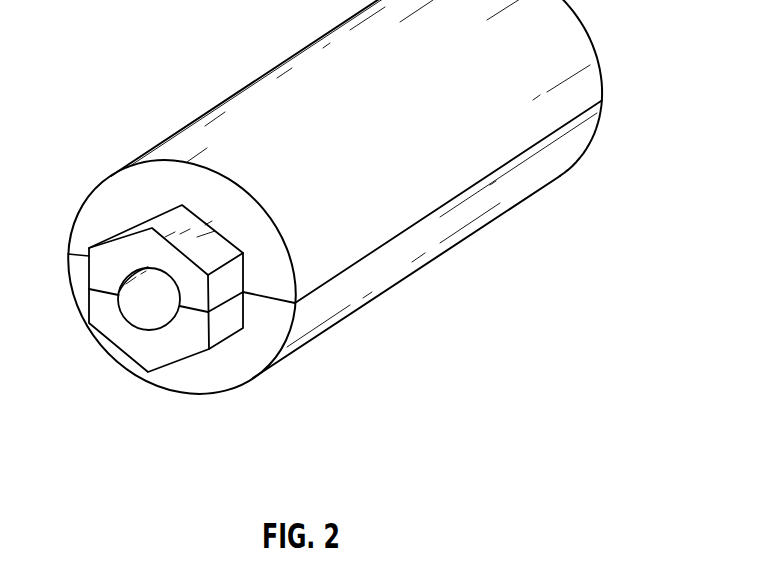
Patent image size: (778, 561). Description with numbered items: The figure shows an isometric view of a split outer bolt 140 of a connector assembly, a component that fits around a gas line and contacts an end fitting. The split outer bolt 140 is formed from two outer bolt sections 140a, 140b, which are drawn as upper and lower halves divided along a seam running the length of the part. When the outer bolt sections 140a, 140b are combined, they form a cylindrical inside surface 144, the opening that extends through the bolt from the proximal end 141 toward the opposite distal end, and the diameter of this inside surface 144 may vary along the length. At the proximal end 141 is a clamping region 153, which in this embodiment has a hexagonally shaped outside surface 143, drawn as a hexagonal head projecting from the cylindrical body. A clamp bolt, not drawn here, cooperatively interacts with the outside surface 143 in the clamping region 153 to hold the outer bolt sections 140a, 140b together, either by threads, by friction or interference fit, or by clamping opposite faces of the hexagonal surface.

The split outer bolt 140 is at (154, 103).
The outer bolt section 140a is at (533, 58).
The outer bolt section 140b is at (552, 155).
The proximal end 141 is at (107, 322).
The outside surface 143 is at (398, 287).
The inside surface 144 is at (160, 302).
The clamping region 153 is at (107, 215).